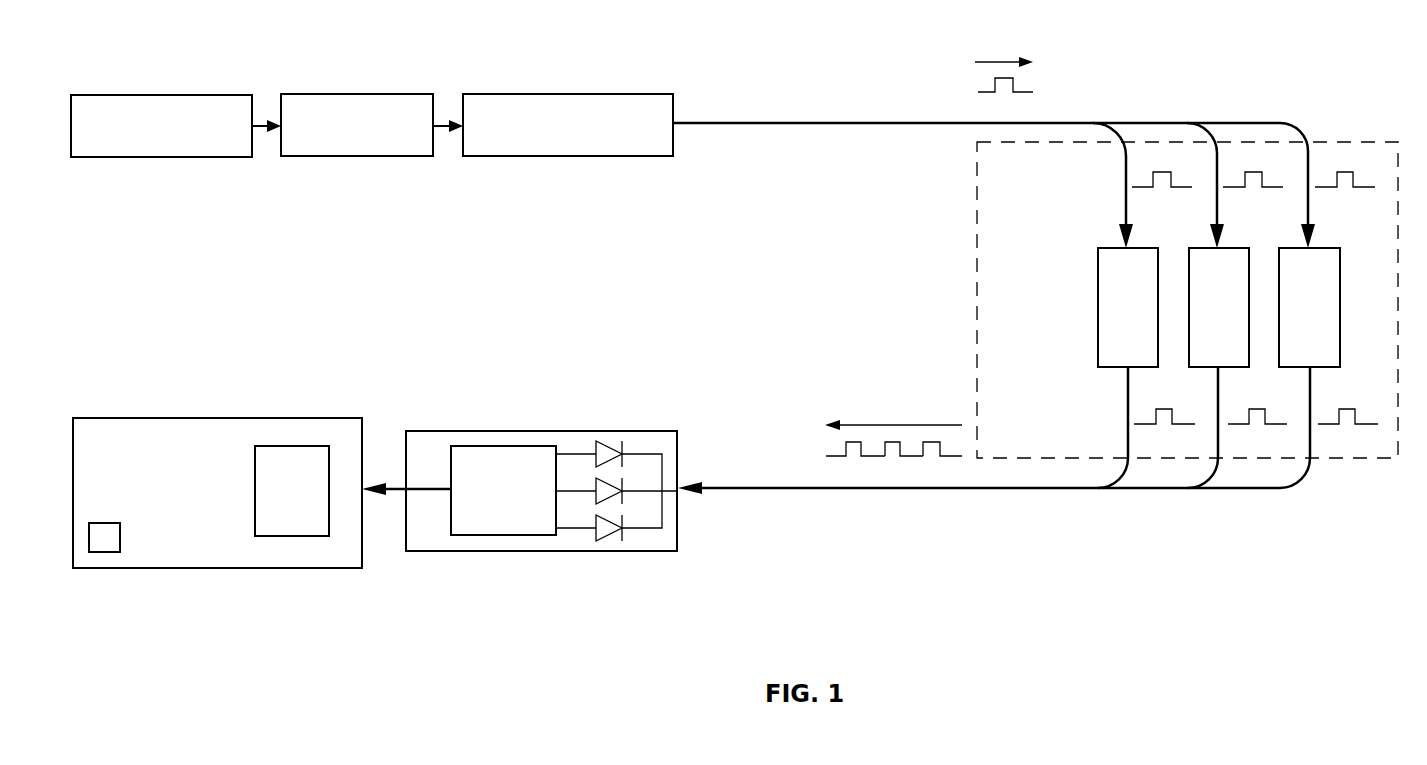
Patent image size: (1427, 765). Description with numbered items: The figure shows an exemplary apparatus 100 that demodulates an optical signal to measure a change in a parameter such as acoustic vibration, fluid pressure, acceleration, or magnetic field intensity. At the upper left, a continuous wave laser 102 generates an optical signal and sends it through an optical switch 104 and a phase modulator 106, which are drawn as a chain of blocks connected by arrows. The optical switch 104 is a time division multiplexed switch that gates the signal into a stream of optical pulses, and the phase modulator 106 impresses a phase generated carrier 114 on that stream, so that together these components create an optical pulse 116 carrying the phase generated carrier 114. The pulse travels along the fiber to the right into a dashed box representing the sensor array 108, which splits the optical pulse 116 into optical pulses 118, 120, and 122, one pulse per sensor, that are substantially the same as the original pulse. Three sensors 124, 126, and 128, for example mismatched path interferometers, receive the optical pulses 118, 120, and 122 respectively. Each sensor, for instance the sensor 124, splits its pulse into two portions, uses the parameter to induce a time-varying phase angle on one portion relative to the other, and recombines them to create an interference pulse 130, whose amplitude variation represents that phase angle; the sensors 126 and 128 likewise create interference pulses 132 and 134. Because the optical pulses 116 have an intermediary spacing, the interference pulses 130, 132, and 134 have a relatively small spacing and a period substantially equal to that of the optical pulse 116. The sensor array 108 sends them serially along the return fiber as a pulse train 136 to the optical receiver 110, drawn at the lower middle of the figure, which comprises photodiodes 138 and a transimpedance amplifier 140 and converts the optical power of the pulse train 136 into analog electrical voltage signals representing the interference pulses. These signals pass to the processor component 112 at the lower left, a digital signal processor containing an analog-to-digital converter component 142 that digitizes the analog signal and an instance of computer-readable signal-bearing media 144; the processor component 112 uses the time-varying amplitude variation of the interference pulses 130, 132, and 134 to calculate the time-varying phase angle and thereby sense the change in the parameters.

The apparatus 100 is at (429, 711).
The laser 102 is at (162, 157).
The optical switch 104 is at (343, 157).
The phase modulator 106 is at (508, 157).
The sensor array 108 is at (977, 198).
The optical receiver 110 is at (497, 431).
The processor component 112 is at (165, 418).
The phase generated carrier 114 is at (776, 469).
The optical pulse 116 is at (968, 90).
The optical pulse 118 is at (1152, 150).
The optical pulse 120 is at (1242, 150).
The optical pulse 122 is at (1334, 150).
The sensor 124 is at (1097, 262).
The sensor 126 is at (1189, 309).
The sensor 128 is at (1279, 353).
The interference pulse 130 is at (1159, 451).
The interference pulse 132 is at (1250, 451).
The interference pulse 134 is at (1340, 451).
The pulse train 136 is at (883, 390).
The photodiodes 138 is at (642, 542).
The transimpedance amplifier 140 is at (526, 536).
The analog-to-digital converter component 142 is at (285, 537).
The computer-readable signal-bearing media 144 is at (105, 552).